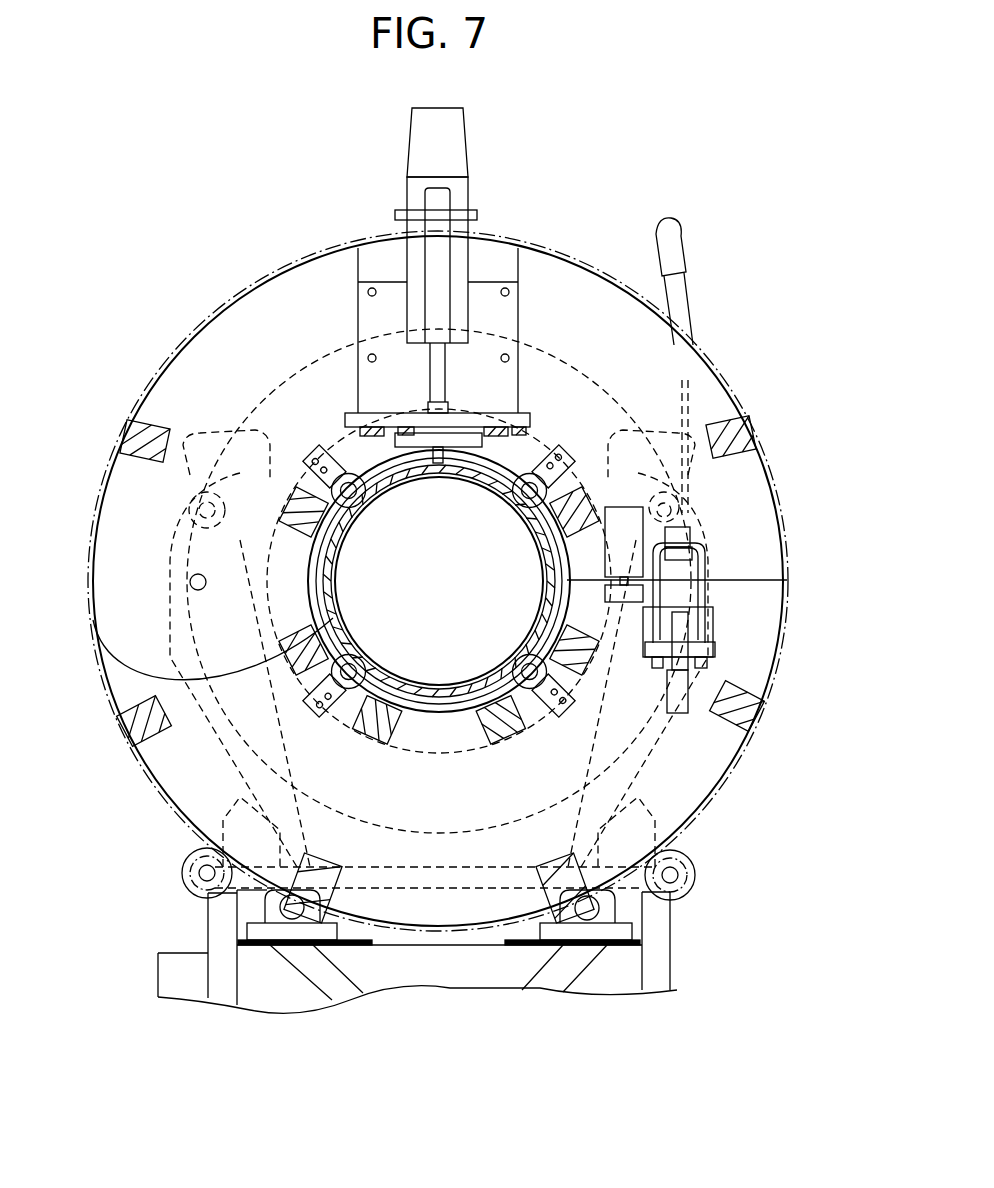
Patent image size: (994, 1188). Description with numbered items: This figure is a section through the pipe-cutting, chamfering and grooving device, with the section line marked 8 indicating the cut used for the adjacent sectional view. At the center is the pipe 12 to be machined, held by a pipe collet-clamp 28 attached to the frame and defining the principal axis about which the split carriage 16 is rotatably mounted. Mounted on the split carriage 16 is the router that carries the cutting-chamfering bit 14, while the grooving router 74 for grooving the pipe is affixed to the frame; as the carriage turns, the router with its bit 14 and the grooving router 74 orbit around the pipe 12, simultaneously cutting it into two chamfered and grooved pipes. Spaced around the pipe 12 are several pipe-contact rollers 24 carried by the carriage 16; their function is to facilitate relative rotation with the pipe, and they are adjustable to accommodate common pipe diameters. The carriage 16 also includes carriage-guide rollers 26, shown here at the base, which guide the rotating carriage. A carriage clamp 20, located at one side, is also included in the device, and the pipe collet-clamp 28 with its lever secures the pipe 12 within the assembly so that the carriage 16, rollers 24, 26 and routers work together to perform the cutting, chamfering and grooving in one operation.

The section line 8- 8 is at (792, 123).
The pipe 12 is at (333, 623).
The cutting-chamfering bit 14 is at (432, 410).
The split carriage 16 is at (554, 266).
The carriage clamp 20 is at (703, 527).
The pipe-contact roller 24 is at (535, 452).
The carriage-guide roller 26 is at (183, 881).
The pipe collet-clamp 28 is at (671, 222).
The grooving router 74 is at (453, 143).